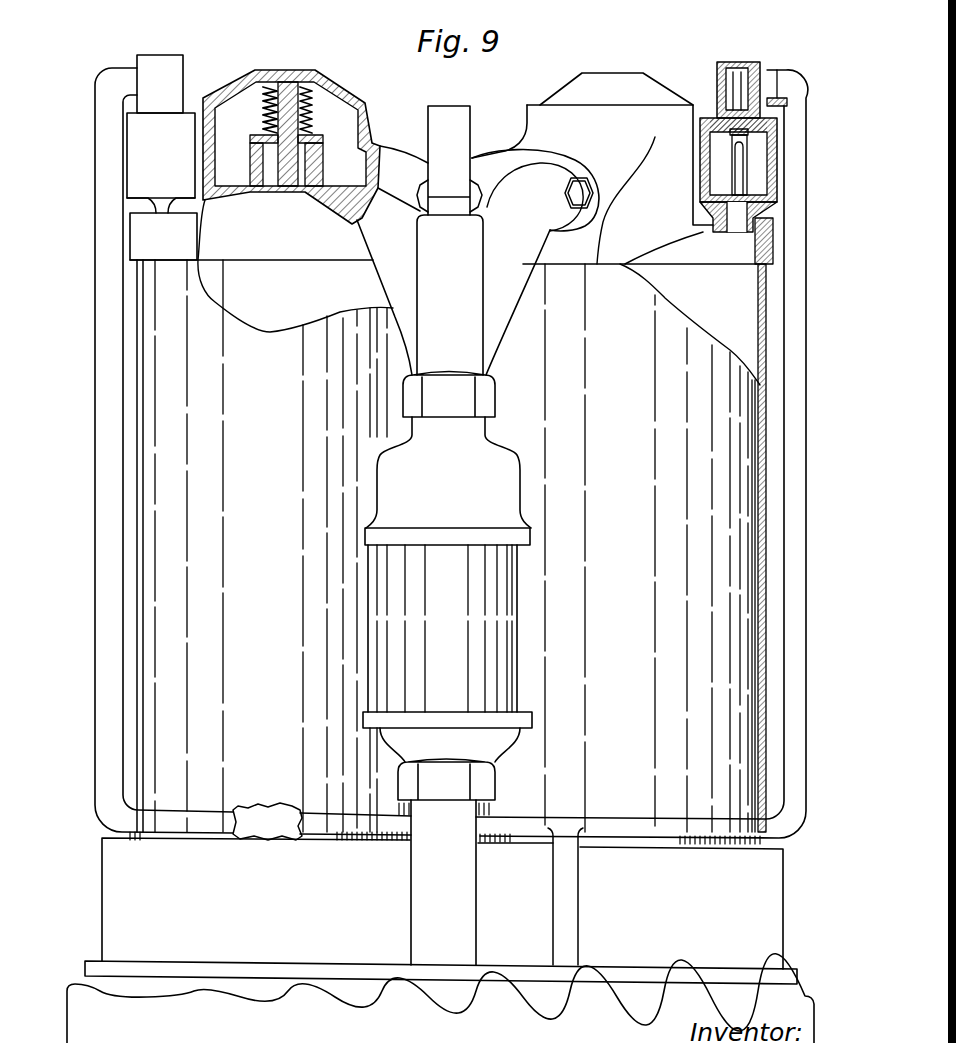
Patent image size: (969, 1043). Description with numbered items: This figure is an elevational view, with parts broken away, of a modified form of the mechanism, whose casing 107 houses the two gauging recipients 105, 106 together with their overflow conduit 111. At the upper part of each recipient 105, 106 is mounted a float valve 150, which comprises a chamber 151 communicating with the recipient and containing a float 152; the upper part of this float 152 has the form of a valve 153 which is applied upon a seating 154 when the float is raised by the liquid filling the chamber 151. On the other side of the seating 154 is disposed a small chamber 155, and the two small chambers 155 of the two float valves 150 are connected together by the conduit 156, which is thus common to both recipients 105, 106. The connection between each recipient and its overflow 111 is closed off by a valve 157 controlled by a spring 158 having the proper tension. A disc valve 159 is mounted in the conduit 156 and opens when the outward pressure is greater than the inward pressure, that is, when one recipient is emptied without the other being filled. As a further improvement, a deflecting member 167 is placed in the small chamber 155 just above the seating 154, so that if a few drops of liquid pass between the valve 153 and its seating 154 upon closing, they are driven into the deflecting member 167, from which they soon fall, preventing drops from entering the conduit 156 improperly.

The gauging recipient 105 is at (667, 448).
The gauging recipient 106 is at (243, 442).
The casing 107 is at (758, 1020).
The overflow conduit 111 is at (383, 227).
The float valve 150 is at (157, 140).
The chamber 151 is at (760, 128).
The float 152 is at (755, 177).
The valve 153 is at (717, 117).
The seating 154 is at (748, 118).
The small chamber 155 is at (757, 62).
The conduit 156 is at (100, 412).
The valve 157 is at (318, 135).
The spring 158 is at (267, 112).
The disc valve 159 is at (292, 826).
The deflecting member 167 is at (740, 66).